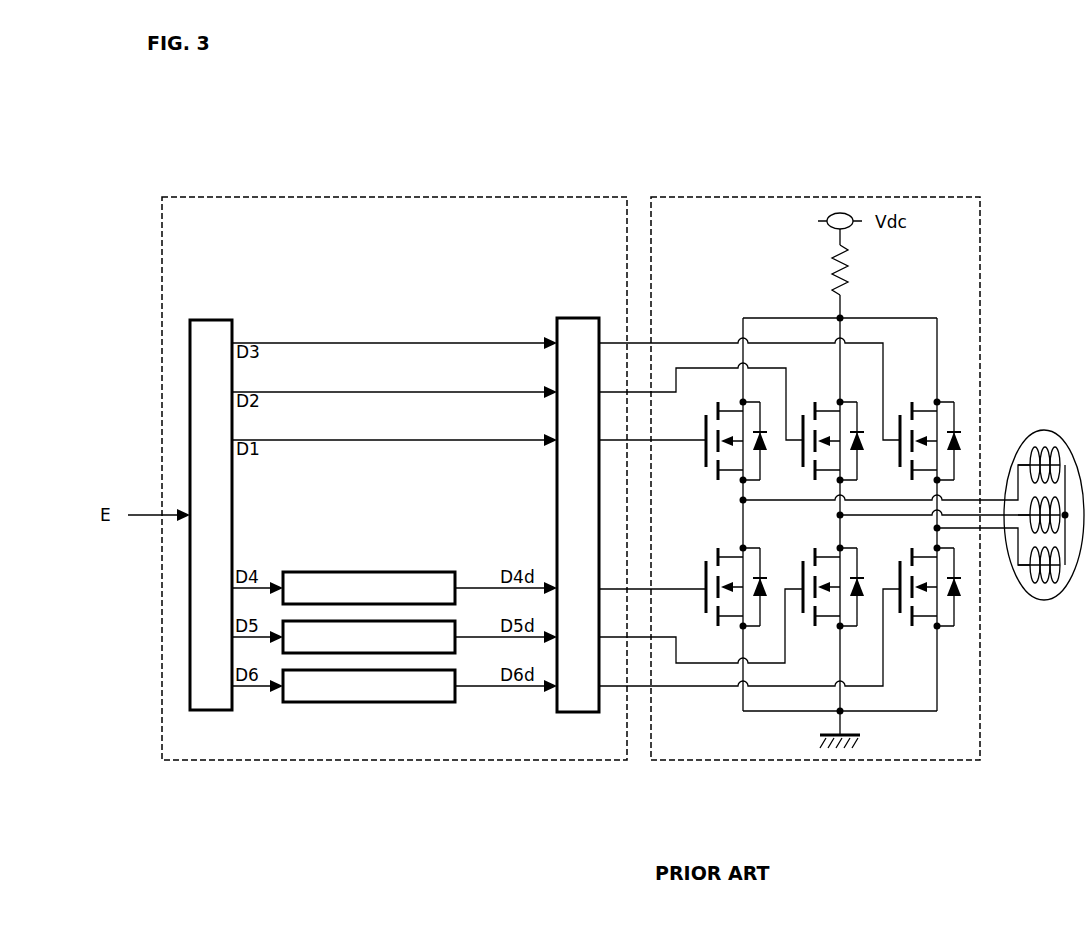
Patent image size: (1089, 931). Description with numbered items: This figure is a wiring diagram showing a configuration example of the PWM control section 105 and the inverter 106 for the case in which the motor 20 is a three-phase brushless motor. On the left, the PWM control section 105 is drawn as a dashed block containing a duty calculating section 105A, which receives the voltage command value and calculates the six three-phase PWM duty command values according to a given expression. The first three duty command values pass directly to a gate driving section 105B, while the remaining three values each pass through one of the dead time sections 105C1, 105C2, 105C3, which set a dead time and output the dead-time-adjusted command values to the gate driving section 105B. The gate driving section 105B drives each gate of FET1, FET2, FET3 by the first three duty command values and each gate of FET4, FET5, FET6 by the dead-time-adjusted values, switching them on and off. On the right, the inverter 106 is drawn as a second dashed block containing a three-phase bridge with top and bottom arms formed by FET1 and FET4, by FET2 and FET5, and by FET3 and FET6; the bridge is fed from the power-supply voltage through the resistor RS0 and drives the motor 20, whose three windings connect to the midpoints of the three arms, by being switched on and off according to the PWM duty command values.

The PWM control section 105 is at (628, 184).
The inverter 106 is at (972, 184).
The duty calculating section 105A is at (228, 308).
The gate driving section 105B is at (598, 308).
The dead time section 105C1 is at (470, 572).
The dead time section 105C2 is at (470, 621).
The dead time section 105C3 is at (470, 670).
The motor 20 is at (1052, 434).
The shunt resistor RS0 is at (816, 270).
The element FET1 is at (717, 449).
The element FET2 is at (815, 449).
The element FET3 is at (912, 449).
The element FET4 is at (717, 583).
The element FET5 is at (815, 583).
The element FET6 is at (912, 583).